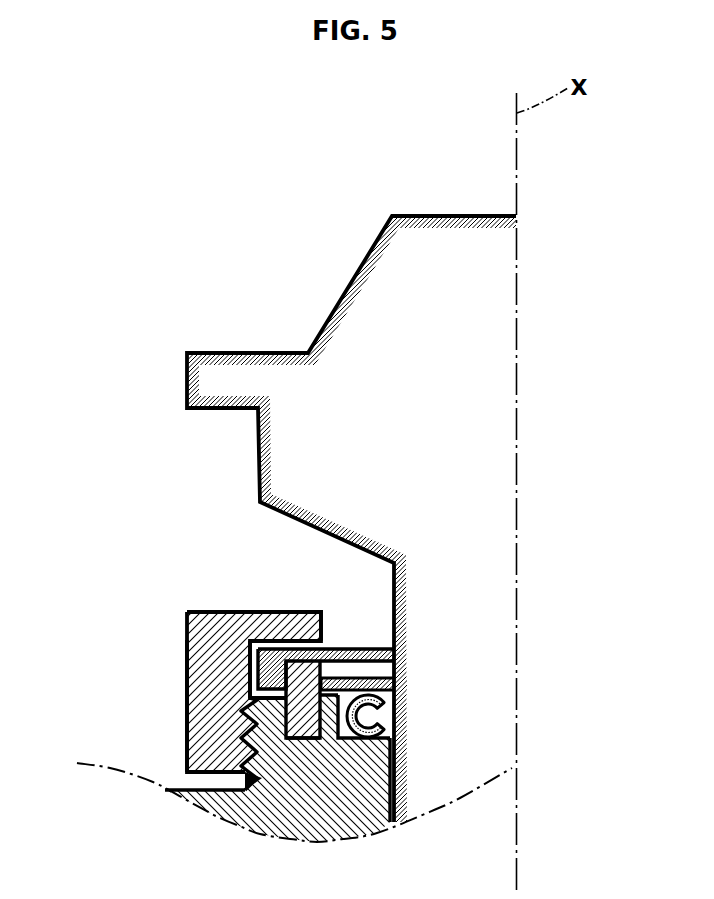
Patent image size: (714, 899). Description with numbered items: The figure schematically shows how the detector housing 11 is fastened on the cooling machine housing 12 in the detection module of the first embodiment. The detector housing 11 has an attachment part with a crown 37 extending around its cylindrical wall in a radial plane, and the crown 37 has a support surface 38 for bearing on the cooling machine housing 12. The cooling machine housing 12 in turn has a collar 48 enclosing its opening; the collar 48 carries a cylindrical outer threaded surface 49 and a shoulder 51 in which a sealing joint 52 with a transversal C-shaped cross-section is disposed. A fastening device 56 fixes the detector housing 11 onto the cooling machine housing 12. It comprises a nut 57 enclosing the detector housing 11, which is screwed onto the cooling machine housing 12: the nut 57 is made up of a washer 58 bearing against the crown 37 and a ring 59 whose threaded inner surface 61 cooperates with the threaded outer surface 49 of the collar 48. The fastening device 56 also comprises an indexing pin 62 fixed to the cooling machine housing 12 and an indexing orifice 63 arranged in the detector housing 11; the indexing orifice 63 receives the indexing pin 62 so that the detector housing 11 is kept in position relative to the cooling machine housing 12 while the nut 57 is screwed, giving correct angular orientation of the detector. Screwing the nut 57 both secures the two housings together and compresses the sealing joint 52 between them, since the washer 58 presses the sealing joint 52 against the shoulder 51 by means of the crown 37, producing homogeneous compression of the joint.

The detector housing 11 is at (393, 603).
The cooling machine housing 12 is at (292, 820).
The crown 37 is at (350, 668).
The support surface 38 is at (387, 700).
The collar 48 is at (304, 732).
The threaded outer surface 49 is at (250, 740).
The shoulder 51 is at (387, 728).
The sealing joint 52 is at (387, 718).
The fastening device 56 is at (321, 449).
The nut 57 is at (189, 650).
The washer 58 is at (287, 625).
The ring 59 is at (210, 681).
The threaded inner surface 61 is at (255, 750).
The indexing pin 62 is at (306, 679).
The indexing orifice 63 is at (314, 733).